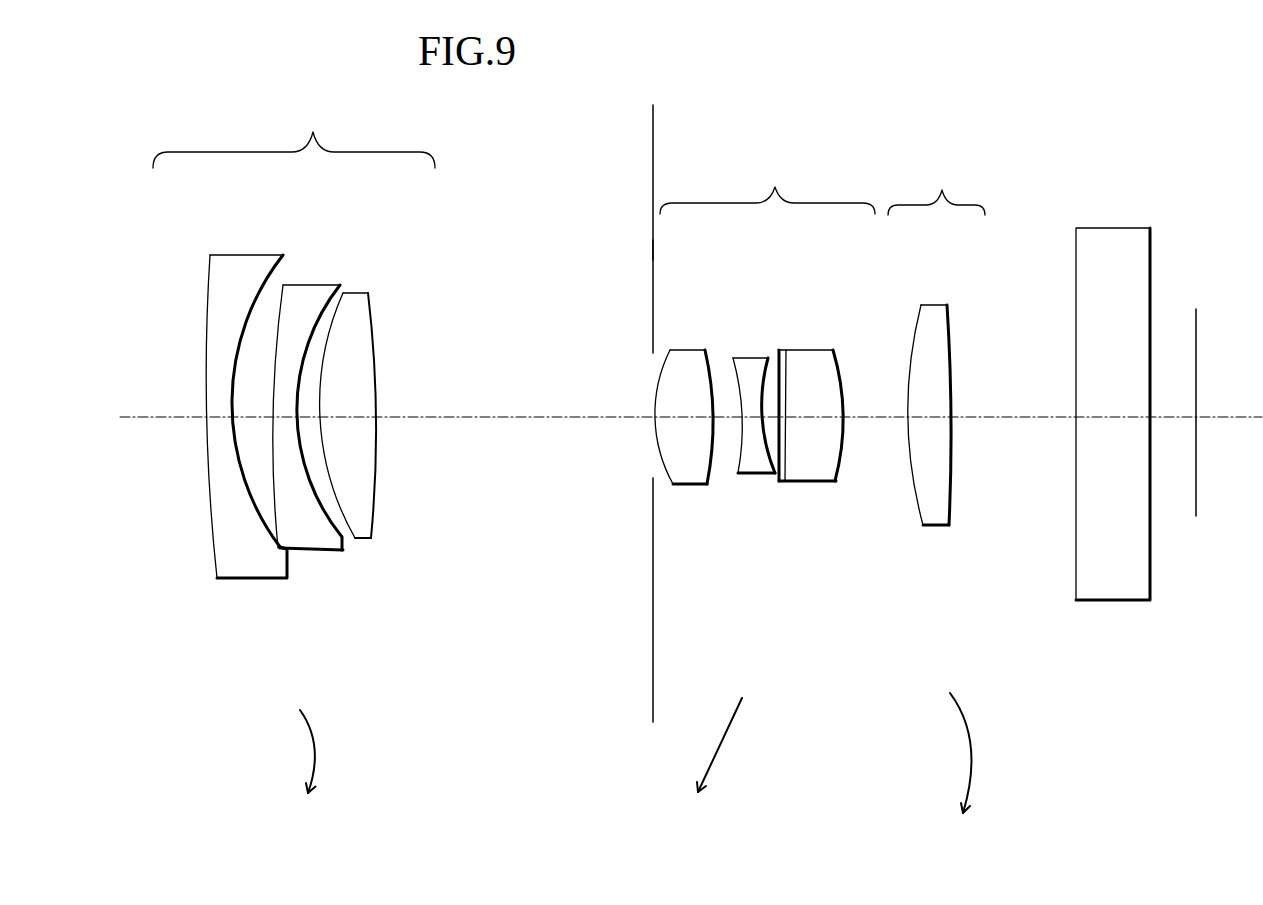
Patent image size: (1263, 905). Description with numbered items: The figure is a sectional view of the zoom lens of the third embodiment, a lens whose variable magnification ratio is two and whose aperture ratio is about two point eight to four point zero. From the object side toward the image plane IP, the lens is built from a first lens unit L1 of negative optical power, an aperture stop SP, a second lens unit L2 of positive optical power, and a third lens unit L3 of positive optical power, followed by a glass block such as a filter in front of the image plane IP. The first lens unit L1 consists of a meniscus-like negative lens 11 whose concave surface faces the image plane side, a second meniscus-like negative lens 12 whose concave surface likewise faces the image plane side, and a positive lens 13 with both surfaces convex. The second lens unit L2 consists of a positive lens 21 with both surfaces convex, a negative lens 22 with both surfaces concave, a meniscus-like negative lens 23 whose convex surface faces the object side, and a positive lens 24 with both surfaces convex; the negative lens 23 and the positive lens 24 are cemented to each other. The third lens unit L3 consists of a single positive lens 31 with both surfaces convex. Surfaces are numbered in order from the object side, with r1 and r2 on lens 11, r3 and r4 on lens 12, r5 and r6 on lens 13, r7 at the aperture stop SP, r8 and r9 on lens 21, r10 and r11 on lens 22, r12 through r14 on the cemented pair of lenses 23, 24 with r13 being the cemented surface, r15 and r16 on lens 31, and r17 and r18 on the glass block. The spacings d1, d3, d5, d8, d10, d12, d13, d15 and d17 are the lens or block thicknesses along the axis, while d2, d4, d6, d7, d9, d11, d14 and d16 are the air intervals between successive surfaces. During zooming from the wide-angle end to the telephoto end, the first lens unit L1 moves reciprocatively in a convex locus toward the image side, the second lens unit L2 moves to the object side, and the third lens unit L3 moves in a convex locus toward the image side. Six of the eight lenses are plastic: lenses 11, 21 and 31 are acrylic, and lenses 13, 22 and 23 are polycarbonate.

The meniscus-like negative lens 11 is at (226, 396).
The meniscus-like negative lens 12 is at (324, 416).
The positive lens 13 is at (379, 396).
The positive lens 21 is at (687, 435).
The negative lens 22 is at (745, 421).
The meniscus-like negative lens 23 is at (839, 433).
The positive lens 24 is at (867, 409).
The positive lens 31 is at (939, 420).
The first lens unit L1 is at (294, 133).
The second lens unit L2 is at (767, 186).
The third lens unit L3 is at (936, 187).
The aperture stop SP is at (652, 398).
The image plane IP is at (1196, 325).
The curvature radius of the first surface r1 is at (209, 278).
The curvature radius of the second surface r2 is at (283, 256).
The curvature radius of the third surface r3 is at (302, 380).
The curvature radius of the fourth surface r4 is at (340, 283).
The curvature radius of the fifth surface r5 is at (344, 294).
The curvature radius of the sixth surface r6 is at (375, 301).
The curvature radius of the seventh surface r7 is at (652, 248).
The curvature radius of the eighth surface r8 is at (671, 351).
The curvature radius of the ninth surface r9 is at (704, 351).
The curvature radius of the tenth surface r10 is at (733, 357).
The curvature radius of the eleventh surface r11 is at (762, 356).
The curvature radius of the twelfth surface r12 is at (781, 352).
The curvature radius of the thirteenth surface r13 is at (808, 352).
The curvature radius of the fourteenth surface r14 is at (843, 352).
The curvature radius of the fifteenth surface r15 is at (921, 318).
The curvature radius of the sixteenth surface r16 is at (950, 320).
The curvature radius of the seventeenth surface r17 is at (1075, 250).
The curvature radius of the eighteenth surface r18 is at (1151, 245).
The lens thickness between the first and second surfaces d1 is at (214, 419).
The air interval between the second and third surfaces d2 is at (250, 419).
The lens thickness between the third and fourth surfaces d3 is at (282, 419).
The air interval between the fourth and fifth surfaces d4 is at (308, 419).
The lens thickness between the fifth and sixth surfaces d5 is at (347, 419).
The air interval between the sixth and seventh surfaces d6 is at (522, 419).
The air interval between the seventh and eighth surfaces d7 is at (647, 419).
The lens thickness between the eighth and ninth surfaces d8 is at (676, 487).
The air interval between the ninth and tenth surfaces d9 is at (722, 419).
The lens thickness between the tenth and eleventh surfaces d10 is at (752, 419).
The air interval between the eleventh and twelfth surfaces d11 is at (772, 476).
The lens thickness between the twelfth and thirteenth surfaces d12 is at (784, 419).
The lens thickness between the thirteenth and fourteenth surfaces d13 is at (812, 419).
The air interval between the fourteenth and fifteenth surfaces d14 is at (877, 419).
The lens thickness between the fifteenth and sixteenth surfaces d15 is at (929, 419).
The air interval between the sixteenth and seventeenth surfaces d16 is at (1018, 419).
The thickness between the seventeenth and eighteenth surfaces d17 is at (1115, 419).